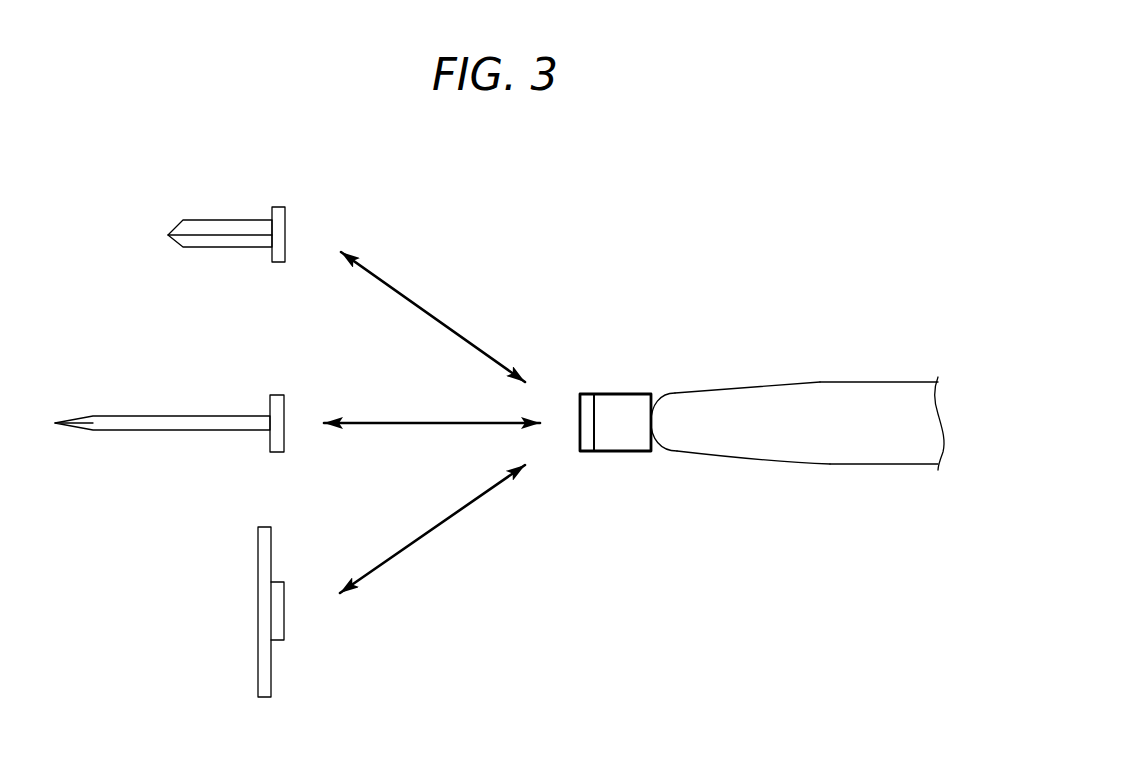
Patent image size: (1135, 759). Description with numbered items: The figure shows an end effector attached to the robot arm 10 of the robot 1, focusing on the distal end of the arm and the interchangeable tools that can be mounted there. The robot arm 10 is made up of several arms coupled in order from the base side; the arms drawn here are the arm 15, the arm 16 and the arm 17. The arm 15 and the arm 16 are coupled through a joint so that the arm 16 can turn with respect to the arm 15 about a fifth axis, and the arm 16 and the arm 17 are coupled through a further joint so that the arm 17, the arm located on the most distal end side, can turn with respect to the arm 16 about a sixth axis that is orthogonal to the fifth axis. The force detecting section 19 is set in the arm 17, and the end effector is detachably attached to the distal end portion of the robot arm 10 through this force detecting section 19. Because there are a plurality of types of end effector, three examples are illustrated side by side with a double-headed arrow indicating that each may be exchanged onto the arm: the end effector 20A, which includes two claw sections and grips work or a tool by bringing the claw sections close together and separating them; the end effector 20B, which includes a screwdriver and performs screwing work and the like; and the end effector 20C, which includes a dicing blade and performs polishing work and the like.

The robot hand / holding system 1 is at (779, 229).
The robot arm 10 is at (797, 389).
The arm 15 is at (782, 422).
The arm 16 is at (673, 394).
The arm 17 is at (619, 402).
The force detecting section 19 is at (590, 400).
The end effector 20A is at (222, 218).
The end effector 20B is at (193, 415).
The end effector 20C is at (257, 660).